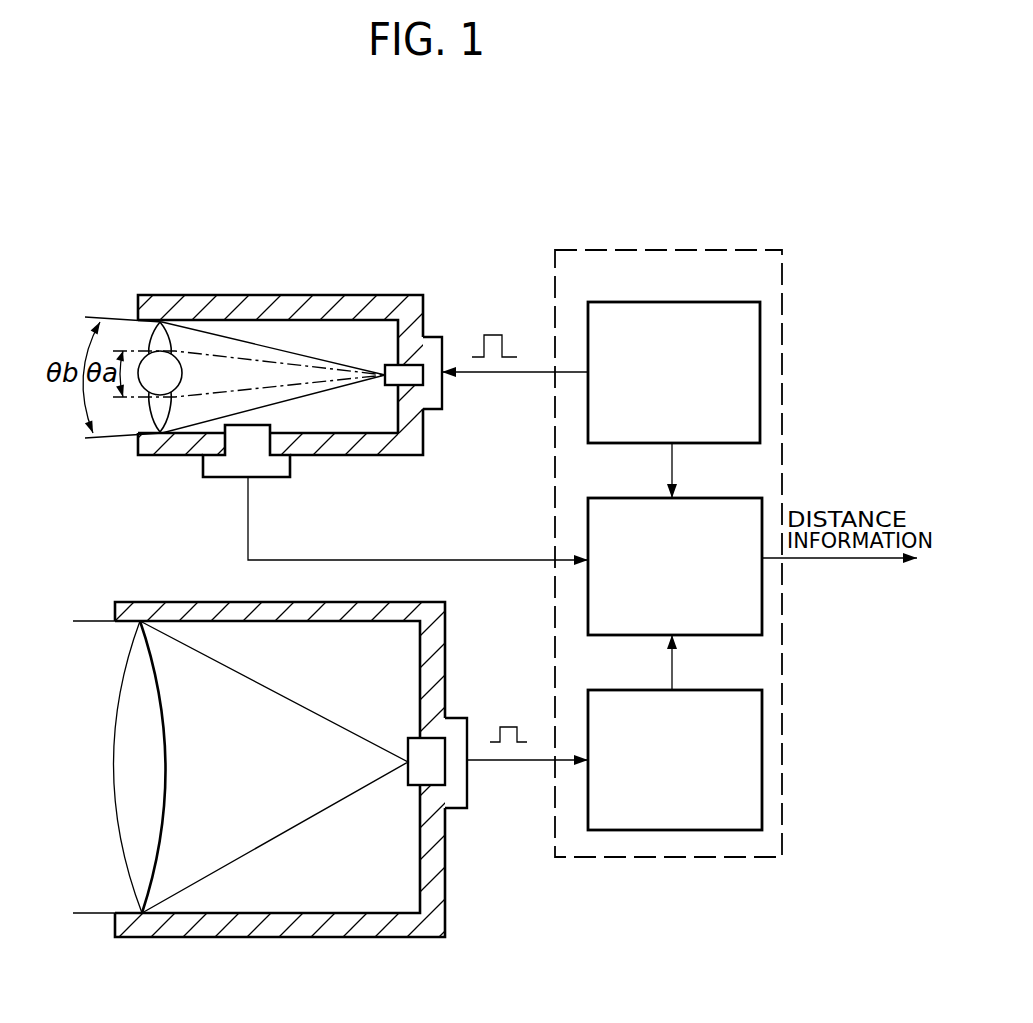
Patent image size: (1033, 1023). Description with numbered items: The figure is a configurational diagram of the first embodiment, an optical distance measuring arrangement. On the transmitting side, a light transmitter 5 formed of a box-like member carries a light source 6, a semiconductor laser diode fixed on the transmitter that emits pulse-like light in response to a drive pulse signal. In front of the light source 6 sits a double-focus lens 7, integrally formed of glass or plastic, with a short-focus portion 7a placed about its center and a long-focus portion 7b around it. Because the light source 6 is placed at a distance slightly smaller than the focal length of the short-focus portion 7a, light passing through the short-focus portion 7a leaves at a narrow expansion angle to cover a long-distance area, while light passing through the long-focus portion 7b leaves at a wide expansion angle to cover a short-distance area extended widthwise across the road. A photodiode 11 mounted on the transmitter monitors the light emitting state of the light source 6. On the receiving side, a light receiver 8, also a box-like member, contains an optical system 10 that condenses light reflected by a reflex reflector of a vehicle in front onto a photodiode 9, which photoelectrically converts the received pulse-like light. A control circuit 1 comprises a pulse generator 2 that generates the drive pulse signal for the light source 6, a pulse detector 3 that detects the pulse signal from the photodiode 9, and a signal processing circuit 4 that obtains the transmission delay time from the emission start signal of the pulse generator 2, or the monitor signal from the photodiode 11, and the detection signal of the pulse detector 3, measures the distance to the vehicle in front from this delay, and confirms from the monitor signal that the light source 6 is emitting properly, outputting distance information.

The control circuit 1 is at (691, 250).
The pulse generator 2 is at (703, 302).
The pulse detector 3 is at (718, 690).
The signal processing circuit 4 is at (716, 498).
The light transmitter 5 is at (286, 303).
The light source 6 is at (430, 346).
The double-focus lens 7 is at (148, 361).
The short-focus portion 7a is at (173, 371).
The long-focus portion 7b is at (157, 413).
The light receiver 8 is at (188, 611).
The photodiode 9 is at (453, 727).
The optical system 10 is at (150, 840).
The photodiode 11 is at (223, 467).